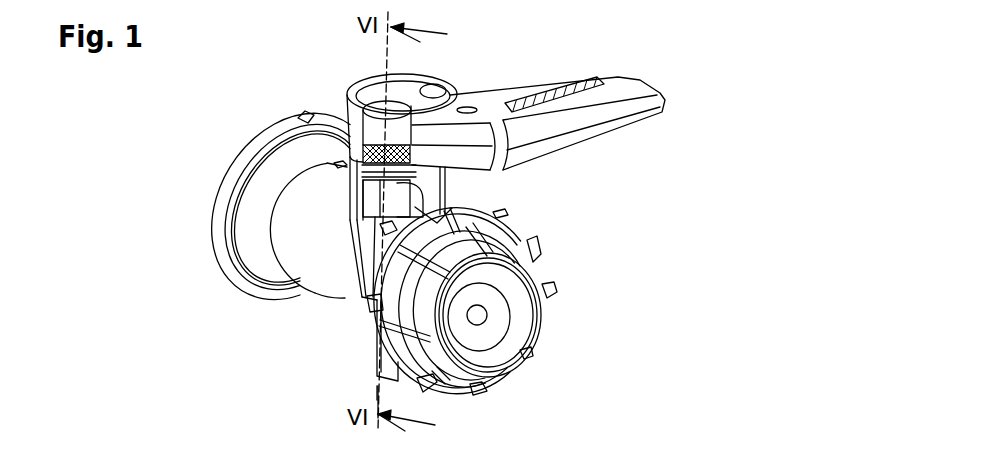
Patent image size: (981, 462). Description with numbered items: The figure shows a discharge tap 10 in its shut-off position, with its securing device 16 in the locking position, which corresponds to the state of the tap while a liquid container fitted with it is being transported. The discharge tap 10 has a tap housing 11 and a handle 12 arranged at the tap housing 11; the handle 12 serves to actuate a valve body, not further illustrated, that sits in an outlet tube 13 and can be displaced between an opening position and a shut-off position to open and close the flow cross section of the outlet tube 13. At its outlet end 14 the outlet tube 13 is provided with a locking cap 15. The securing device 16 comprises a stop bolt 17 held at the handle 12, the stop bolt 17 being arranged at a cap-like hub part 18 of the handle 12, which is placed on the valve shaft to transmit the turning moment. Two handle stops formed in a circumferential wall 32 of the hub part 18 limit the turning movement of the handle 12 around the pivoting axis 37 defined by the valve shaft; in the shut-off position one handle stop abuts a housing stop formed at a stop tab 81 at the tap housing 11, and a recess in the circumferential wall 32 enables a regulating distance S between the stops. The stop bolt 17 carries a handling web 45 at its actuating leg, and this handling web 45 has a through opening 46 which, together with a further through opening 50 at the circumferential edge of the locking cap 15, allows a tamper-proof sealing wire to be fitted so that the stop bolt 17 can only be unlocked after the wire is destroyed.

The discharge tap 10 is at (200, 206).
The tap housing 11 is at (202, 250).
The handle 12 is at (587, 75).
The outlet tube 13 is at (357, 233).
The outlet end 14 is at (362, 370).
The locking cap 15 is at (518, 318).
The securing device 16 is at (338, 166).
The stop bolt 17 is at (402, 131).
The hub part 18 is at (343, 110).
The circumferential wall 32 is at (303, 113).
The pivoting axis 37 is at (379, 388).
The handling web 45 is at (350, 97).
The through opening 46 is at (385, 133).
The further through opening 50 is at (530, 252).
The stop tab 81 is at (323, 282).
The regulating distance S is at (475, 227).